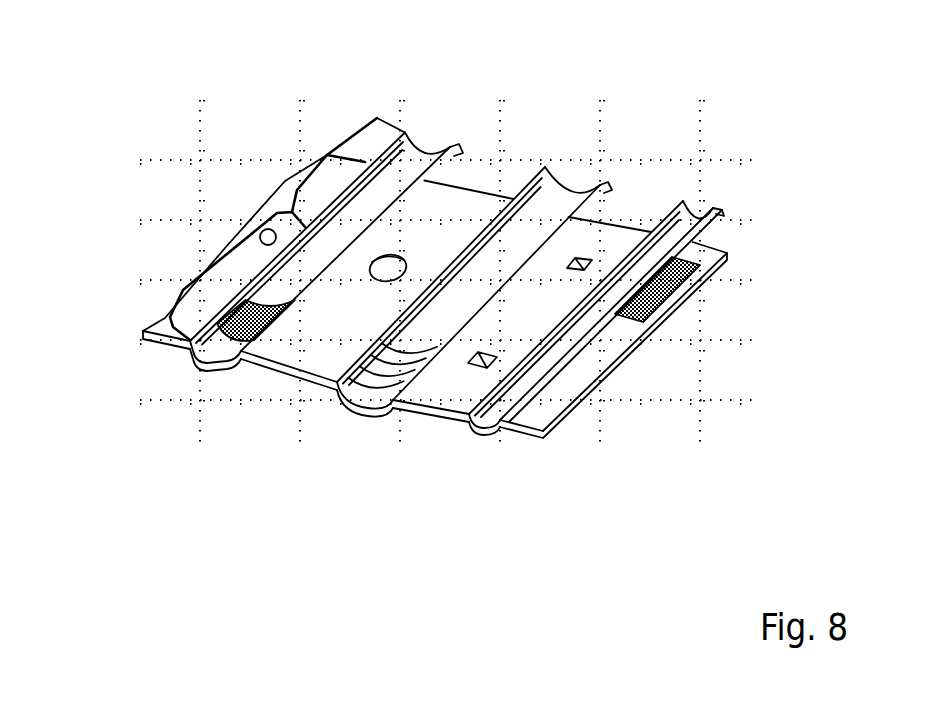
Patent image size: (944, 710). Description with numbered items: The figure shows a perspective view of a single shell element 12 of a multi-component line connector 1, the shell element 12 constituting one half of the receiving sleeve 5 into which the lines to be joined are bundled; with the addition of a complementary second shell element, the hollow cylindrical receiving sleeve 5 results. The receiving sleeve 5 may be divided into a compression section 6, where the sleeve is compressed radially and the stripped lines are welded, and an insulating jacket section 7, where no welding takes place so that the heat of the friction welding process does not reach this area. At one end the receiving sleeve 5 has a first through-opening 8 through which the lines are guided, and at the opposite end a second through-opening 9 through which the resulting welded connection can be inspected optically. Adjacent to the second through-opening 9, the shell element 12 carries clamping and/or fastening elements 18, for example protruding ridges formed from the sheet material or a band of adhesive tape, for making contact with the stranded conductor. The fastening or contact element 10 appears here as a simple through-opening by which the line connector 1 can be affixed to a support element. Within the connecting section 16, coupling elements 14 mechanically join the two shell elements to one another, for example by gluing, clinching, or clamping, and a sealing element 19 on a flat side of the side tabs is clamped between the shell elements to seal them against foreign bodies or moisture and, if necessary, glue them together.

The line connector 1 is at (435, 248).
The shell element 12 is at (205, 140).
The receiving sleeve 5 is at (222, 362).
The compression section 6 is at (218, 262).
The insulating jacket section 7 is at (325, 156).
The first through-opening 8 is at (425, 141).
The second through-opening 9 is at (177, 353).
The contact element 10 is at (400, 256).
The coupling element 14 is at (267, 236).
The connecting section 16 is at (303, 341).
The clamping and/or fastening element 18 is at (236, 322).
The sealing element 19 is at (640, 323).